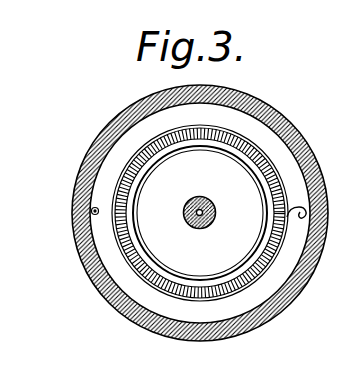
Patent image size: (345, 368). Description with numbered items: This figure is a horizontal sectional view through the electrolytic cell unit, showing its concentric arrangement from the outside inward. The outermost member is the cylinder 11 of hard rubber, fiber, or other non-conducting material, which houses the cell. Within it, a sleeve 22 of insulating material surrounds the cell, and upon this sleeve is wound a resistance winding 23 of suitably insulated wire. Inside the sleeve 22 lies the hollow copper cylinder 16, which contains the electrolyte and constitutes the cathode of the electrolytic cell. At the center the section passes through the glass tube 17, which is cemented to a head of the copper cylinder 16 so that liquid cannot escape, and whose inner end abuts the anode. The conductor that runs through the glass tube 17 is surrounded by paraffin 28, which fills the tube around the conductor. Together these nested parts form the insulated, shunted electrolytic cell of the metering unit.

The cylinder 11 is at (295, 131).
The copper cylinder 16 is at (140, 167).
The glass tube 17 is at (216, 216).
The sleeve 22 is at (113, 187).
The resistance winding 23 is at (117, 240).
The paraffin 28 is at (188, 218).